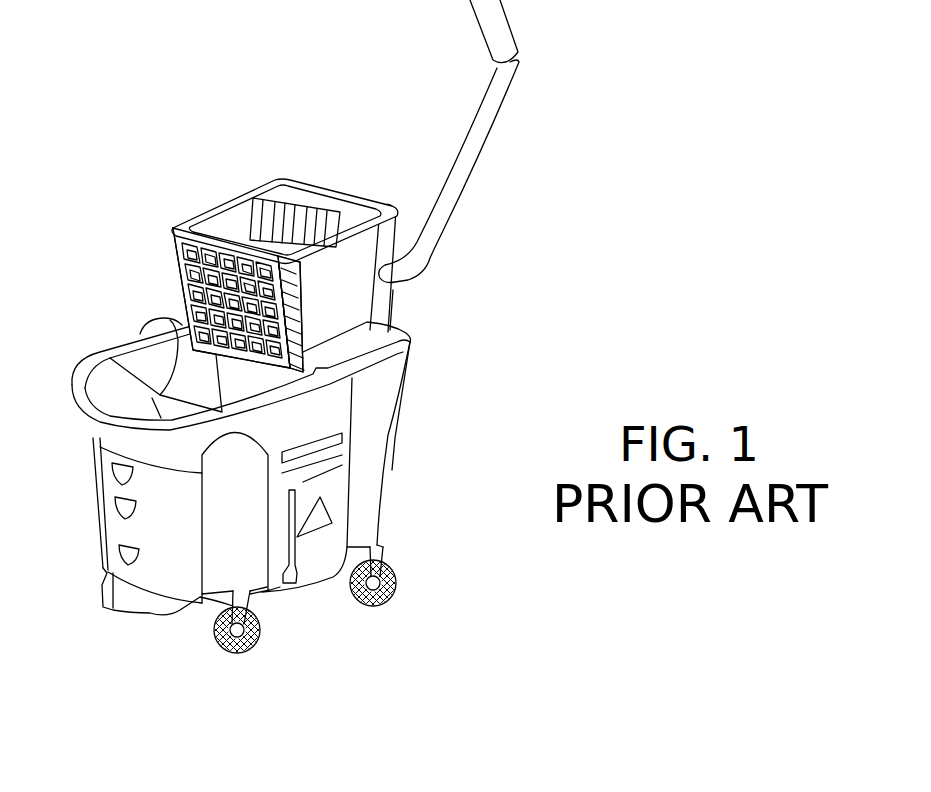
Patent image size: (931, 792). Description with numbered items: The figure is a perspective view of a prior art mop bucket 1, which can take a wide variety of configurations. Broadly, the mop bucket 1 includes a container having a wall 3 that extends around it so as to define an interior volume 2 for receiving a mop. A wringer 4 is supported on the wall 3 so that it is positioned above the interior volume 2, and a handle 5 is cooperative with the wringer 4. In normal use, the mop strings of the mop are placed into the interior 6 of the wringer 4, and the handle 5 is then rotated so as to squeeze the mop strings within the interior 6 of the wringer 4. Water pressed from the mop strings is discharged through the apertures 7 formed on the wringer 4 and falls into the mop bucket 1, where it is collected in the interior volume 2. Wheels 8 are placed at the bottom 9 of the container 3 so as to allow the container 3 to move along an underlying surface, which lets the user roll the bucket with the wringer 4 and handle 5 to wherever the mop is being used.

The mop bucket 1 is at (444, 411).
The interior volume 2 is at (127, 364).
The wall 3 is at (95, 491).
The wringer 4 is at (228, 205).
The handle 5 is at (470, 180).
The interior of the wringer 6 is at (303, 207).
The apertures 7 is at (178, 273).
The wheels 8 is at (394, 580).
The bottom 9 is at (150, 616).